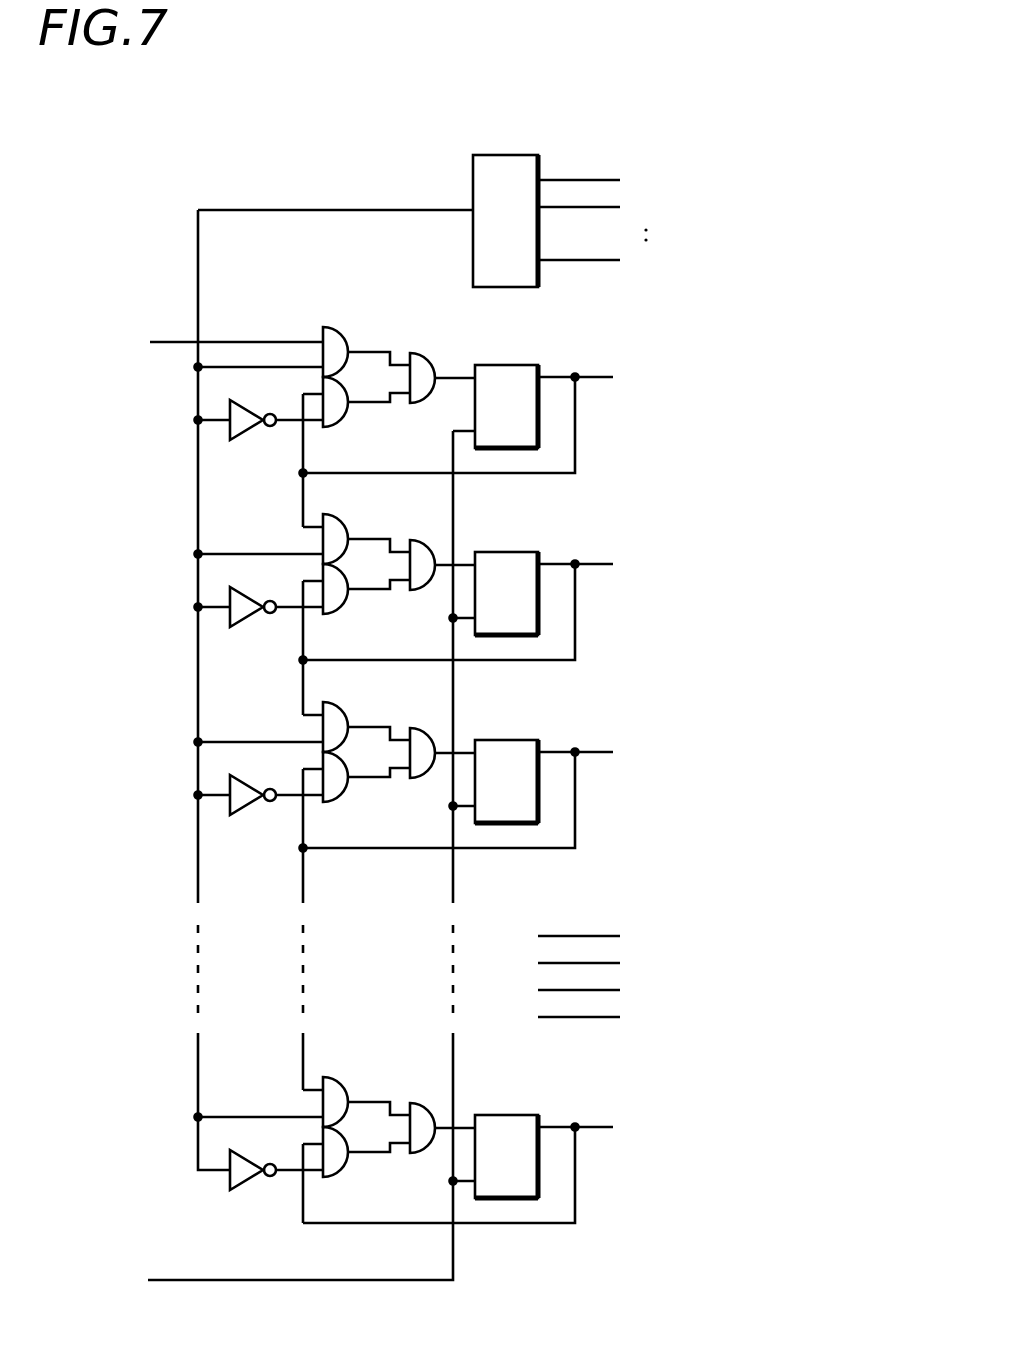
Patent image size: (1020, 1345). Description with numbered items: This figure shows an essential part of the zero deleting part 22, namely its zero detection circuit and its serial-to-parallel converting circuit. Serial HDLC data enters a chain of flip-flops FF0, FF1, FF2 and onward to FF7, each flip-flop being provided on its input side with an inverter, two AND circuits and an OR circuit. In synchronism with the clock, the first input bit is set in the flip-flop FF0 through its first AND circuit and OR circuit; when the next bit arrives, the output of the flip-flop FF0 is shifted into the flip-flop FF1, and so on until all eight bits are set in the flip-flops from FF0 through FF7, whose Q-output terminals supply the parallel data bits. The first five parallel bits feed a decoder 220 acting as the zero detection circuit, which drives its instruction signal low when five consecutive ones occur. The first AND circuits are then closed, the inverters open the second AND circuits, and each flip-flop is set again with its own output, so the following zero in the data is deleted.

The zero deleting part 22 is at (268, 91).
The decoder 220 is at (473, 249).
The flip-flop FF0 is at (506, 389).
The flip-flop FF1 is at (506, 577).
The flip-flop FF2 is at (506, 765).
The flip-flop FF7 is at (506, 1140).